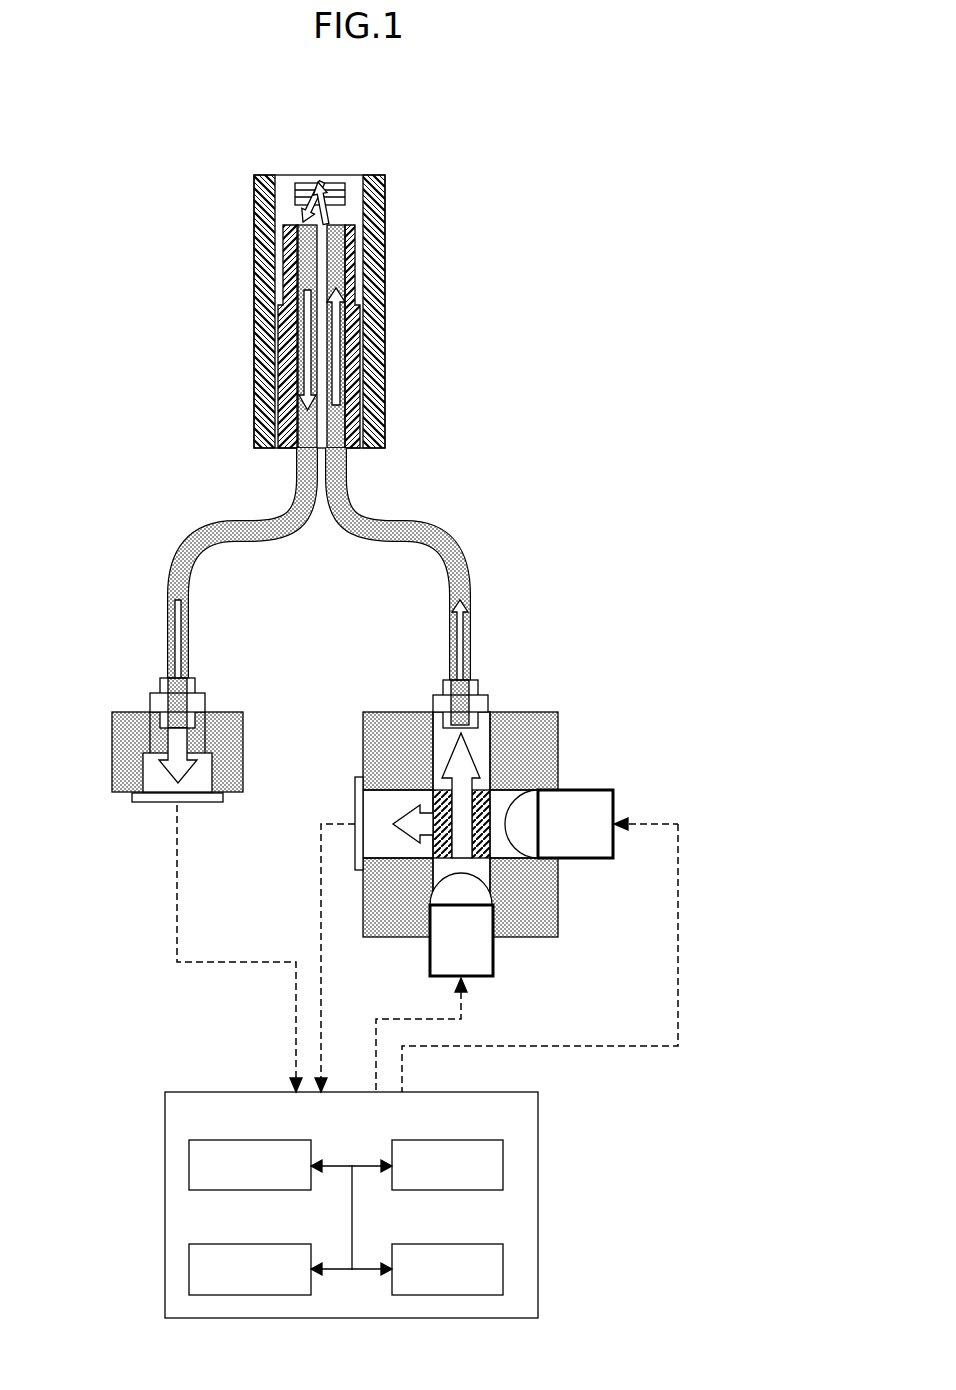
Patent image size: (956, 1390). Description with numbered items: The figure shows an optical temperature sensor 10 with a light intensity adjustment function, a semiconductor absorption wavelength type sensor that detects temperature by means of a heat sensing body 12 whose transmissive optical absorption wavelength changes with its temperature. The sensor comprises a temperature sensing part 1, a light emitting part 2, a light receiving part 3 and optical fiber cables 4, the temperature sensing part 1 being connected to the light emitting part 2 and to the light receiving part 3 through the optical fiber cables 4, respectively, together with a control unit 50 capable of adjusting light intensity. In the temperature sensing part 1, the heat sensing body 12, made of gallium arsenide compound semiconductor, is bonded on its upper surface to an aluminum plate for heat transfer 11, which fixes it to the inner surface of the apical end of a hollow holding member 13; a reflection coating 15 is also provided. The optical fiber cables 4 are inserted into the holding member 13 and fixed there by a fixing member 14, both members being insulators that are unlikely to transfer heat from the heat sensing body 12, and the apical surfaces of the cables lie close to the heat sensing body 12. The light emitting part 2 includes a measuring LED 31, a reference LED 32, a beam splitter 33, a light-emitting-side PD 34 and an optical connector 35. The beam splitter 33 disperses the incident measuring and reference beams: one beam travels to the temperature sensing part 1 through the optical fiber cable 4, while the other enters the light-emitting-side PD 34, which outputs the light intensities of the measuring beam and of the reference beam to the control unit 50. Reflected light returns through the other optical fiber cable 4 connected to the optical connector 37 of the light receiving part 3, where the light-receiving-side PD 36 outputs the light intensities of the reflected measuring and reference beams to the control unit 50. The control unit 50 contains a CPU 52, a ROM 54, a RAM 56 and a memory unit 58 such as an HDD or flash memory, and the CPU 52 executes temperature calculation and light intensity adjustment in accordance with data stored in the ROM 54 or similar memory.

The optical temperature sensor 10 is at (446, 125).
The temperature sensing part 1 is at (354, 164).
The aluminum plate for heat transfer 11 is at (291, 188).
The heat sensing body 12 is at (340, 198).
The holding member 13 is at (378, 370).
The fixing member 14 is at (352, 330).
The reflection coating 15 is at (342, 190).
The optical fiber cables 4 is at (222, 528).
The light receiving part 3 is at (97, 705).
The optical connector 37 is at (158, 694).
The light-receiving-side PD 36 is at (148, 776).
The light emitting part 2 is at (540, 705).
The beam splitter 33 is at (433, 805).
The optical connector 35 is at (488, 700).
The light-emitting-side PD 34 is at (355, 798).
The reference LED 32 is at (578, 790).
The measuring LED 31 is at (493, 958).
The control unit 50 is at (470, 1091).
The CPU 52 is at (242, 1137).
The ROM 54 is at (437, 1137).
The RAM 56 is at (437, 1241).
The memory unit 58 is at (242, 1241).